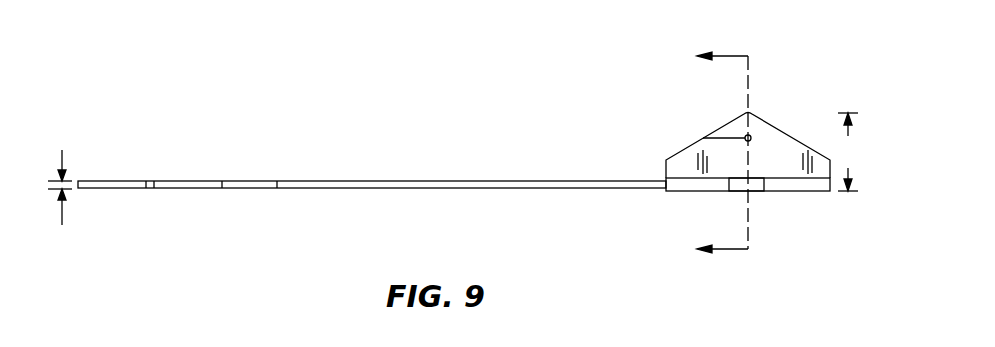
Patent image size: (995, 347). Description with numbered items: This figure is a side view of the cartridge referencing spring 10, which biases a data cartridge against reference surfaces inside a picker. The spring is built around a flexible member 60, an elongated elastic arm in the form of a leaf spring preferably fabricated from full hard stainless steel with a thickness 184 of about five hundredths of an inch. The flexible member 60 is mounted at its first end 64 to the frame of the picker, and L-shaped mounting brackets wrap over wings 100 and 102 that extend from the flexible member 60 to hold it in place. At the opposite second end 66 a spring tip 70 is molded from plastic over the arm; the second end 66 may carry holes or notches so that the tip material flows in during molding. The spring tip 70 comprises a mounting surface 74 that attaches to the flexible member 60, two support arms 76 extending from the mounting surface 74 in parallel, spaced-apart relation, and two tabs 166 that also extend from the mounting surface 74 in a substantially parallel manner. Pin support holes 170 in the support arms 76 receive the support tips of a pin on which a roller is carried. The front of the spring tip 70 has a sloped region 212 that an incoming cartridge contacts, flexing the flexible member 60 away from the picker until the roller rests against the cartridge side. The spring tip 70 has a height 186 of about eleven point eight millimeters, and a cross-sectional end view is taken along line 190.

The flexible member 60 is at (477, 180).
The wing 100 is at (117, 180).
The first end 64 is at (137, 180).
The wing 102 is at (247, 180).
The thickness 184 is at (62, 150).
The spring tip 70 is at (760, 152).
The second end 66 is at (663, 176).
The support arms 76 is at (770, 152).
The mounting surface 74 is at (815, 180).
The tabs 166 is at (735, 185).
The pin support holes 170 is at (712, 137).
The line 190 is at (750, 205).
The sloped region 212 is at (800, 142).
The height 186 is at (851, 152).
The cartridge referencing spring 10 is at (733, 154).